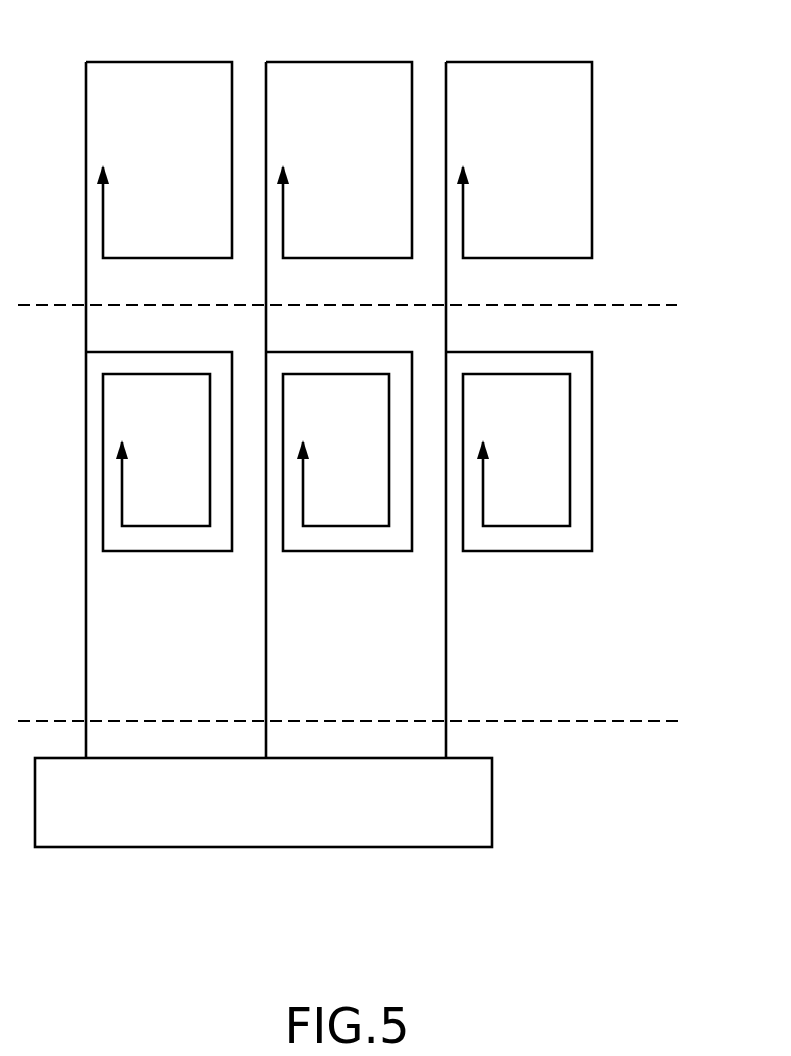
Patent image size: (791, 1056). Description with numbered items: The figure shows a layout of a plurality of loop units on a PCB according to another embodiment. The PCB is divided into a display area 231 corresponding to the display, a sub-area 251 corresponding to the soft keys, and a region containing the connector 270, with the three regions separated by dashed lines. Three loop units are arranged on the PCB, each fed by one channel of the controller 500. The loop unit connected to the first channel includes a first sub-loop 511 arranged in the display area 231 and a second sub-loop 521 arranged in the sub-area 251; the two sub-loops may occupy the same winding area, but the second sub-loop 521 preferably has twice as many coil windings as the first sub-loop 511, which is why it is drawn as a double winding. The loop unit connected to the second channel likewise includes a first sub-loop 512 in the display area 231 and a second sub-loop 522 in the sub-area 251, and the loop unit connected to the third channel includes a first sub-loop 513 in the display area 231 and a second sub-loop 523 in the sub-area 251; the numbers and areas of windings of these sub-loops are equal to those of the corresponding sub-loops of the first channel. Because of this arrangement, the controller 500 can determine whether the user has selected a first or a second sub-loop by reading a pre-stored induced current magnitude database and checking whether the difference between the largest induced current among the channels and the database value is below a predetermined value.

The display area 231 is at (628, 173).
The sub-area 251 is at (622, 462).
The connector 270 is at (624, 798).
The first sub-loop 511 is at (156, 62).
The first sub-loop 512 is at (336, 62).
The first sub-loop 513 is at (516, 62).
The second sub-loop 521 is at (168, 552).
The second sub-loop 522 is at (348, 552).
The second sub-loop 523 is at (529, 552).
The controller 500 is at (267, 848).